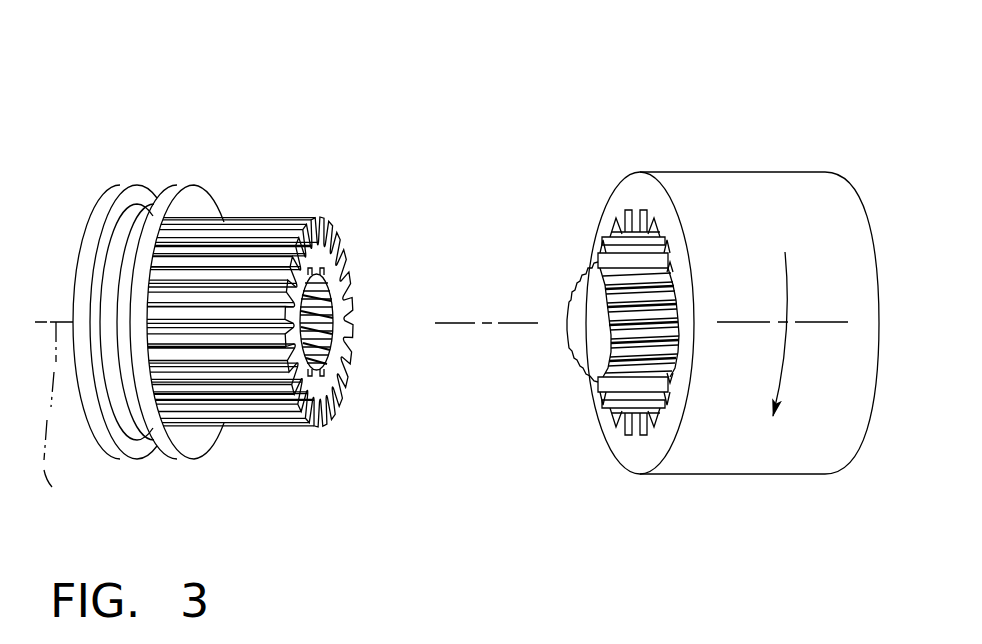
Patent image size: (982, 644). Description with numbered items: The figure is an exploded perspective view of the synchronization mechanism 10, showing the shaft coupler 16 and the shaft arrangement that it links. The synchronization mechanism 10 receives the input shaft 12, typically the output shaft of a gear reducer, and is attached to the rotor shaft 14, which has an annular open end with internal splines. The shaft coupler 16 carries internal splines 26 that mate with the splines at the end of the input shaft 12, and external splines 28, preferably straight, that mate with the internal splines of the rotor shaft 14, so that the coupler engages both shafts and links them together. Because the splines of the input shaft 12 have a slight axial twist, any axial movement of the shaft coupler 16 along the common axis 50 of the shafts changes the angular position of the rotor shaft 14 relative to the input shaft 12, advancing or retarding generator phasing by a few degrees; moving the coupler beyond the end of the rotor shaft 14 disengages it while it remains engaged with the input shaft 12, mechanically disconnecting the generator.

The synchronization mechanism 10 is at (207, 58).
The input shaft 12 is at (553, 259).
The rotor shaft 14 is at (685, 147).
The shaft coupler 16 is at (247, 151).
The internal splines 26 is at (330, 290).
The external splines 28 is at (258, 430).
The axis 50 is at (52, 490).